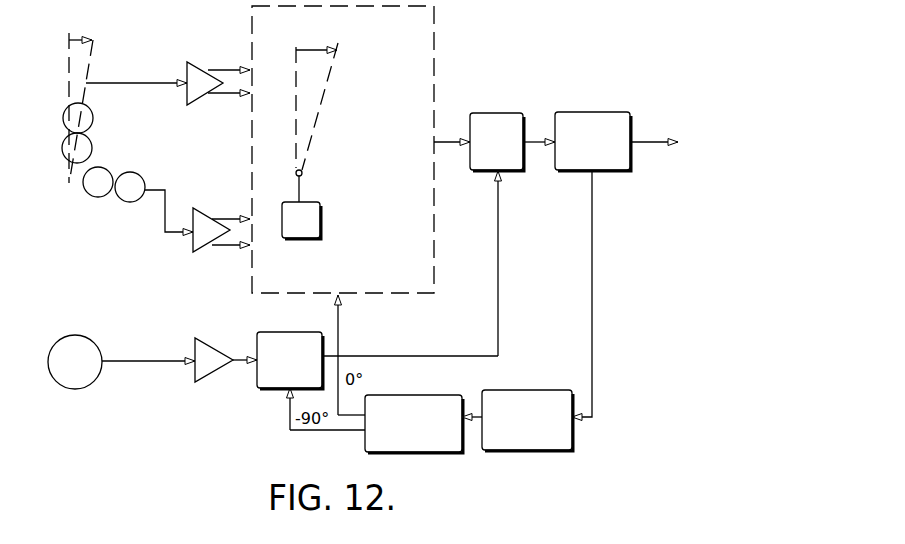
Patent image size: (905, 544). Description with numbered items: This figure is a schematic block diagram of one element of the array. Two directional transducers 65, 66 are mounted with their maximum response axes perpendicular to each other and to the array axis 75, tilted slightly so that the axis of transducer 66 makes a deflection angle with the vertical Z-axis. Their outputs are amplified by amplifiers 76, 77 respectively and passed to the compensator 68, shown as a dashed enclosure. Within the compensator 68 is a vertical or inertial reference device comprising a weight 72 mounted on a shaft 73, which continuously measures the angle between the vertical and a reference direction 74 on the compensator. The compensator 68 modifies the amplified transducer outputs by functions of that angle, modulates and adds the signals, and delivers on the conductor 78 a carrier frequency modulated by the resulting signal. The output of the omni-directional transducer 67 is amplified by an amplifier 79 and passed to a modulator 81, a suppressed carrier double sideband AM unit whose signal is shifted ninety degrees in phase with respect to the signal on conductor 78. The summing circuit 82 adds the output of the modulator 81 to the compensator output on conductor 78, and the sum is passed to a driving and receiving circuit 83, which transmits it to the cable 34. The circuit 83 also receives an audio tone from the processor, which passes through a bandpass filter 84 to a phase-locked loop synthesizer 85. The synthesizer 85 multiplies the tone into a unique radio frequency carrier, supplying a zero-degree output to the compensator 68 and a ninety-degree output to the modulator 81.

The cable 34 is at (659, 183).
The transducer 65 is at (106, 168).
The transducer 66 is at (91, 113).
The omni-directional transducer 67 is at (88, 336).
The compensator 68 is at (392, 8).
The weight 72 is at (321, 213).
The shaft 73 is at (303, 173).
The reference direction 74 is at (326, 90).
The array axis 75 is at (72, 178).
The amplifier 76 is at (208, 215).
The amplifier 77 is at (196, 68).
The conductor 78 is at (443, 141).
The amplifier 79 is at (213, 339).
The modulator 81 is at (291, 333).
The summing circuit 82 is at (495, 114).
The driving and receiving circuit 83 is at (587, 113).
The bandpass filter 84 is at (528, 391).
The phase-locked loop synthesizer 85 is at (420, 394).